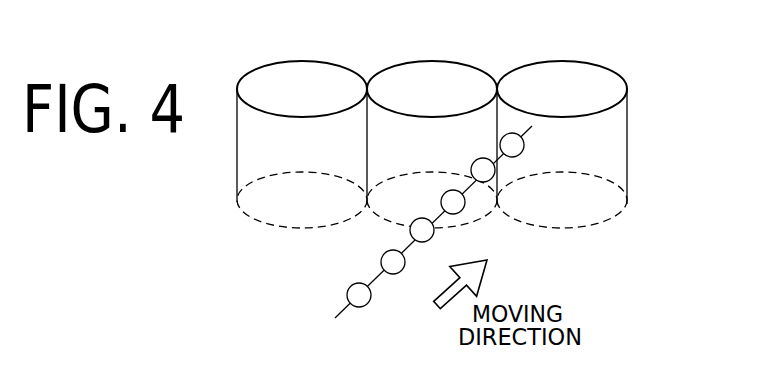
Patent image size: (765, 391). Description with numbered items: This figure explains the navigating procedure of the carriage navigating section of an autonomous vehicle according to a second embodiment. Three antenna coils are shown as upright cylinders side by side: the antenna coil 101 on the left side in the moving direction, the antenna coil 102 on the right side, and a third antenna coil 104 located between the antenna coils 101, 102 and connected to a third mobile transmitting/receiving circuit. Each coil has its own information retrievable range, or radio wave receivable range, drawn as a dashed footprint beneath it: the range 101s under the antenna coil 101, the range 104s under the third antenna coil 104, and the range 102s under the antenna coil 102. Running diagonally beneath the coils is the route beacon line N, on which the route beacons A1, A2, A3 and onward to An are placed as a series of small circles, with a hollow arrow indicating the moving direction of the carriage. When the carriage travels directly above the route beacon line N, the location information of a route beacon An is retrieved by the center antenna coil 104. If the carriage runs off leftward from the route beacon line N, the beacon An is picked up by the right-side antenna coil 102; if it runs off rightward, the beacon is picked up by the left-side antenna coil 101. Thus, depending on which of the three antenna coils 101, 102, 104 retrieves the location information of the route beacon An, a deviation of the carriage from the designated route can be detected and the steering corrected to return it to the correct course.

The antenna coil 101 is at (275, 77).
The third antenna coil 104 is at (430, 77).
The antenna coil 102 is at (591, 91).
The information retrievable range 101s is at (287, 231).
The information retrievable range 104s is at (477, 204).
The information retrievable range 102s is at (593, 213).
The route beacon line N is at (420, 232).
The route beacon A1 is at (366, 307).
The route beacon A2 is at (400, 273).
The route beacon A3 is at (429, 238).
The route beacon An is at (523, 147).